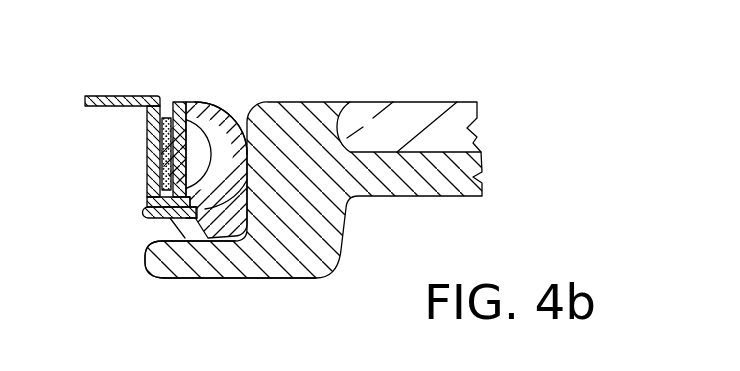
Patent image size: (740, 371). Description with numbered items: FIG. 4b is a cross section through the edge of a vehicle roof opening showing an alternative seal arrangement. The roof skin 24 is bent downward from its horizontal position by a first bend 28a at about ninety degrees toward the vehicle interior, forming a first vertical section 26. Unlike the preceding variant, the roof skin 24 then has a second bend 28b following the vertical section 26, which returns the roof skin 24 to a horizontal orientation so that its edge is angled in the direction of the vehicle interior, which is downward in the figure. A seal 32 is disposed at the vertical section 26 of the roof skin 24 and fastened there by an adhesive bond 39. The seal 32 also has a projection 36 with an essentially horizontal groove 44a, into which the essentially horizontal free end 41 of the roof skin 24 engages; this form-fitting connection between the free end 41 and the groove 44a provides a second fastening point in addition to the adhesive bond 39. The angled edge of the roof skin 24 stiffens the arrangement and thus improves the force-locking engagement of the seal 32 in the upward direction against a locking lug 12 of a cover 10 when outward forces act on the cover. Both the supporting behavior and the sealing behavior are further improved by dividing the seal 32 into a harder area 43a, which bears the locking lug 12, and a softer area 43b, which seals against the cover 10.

The cover 10 is at (395, 89).
The locking lug 12 is at (187, 262).
The roof skin 24 is at (105, 95).
The first vertical section 26 is at (147, 138).
The first bend 28a is at (166, 97).
The second bend 28b is at (147, 198).
The seal 32 is at (201, 91).
The projection 36 is at (145, 213).
The adhesive bond 39 is at (160, 160).
The free end 41 is at (175, 220).
The harder area 43a is at (217, 244).
The softer area 43b is at (220, 113).
The horizontal groove 44a is at (145, 260).